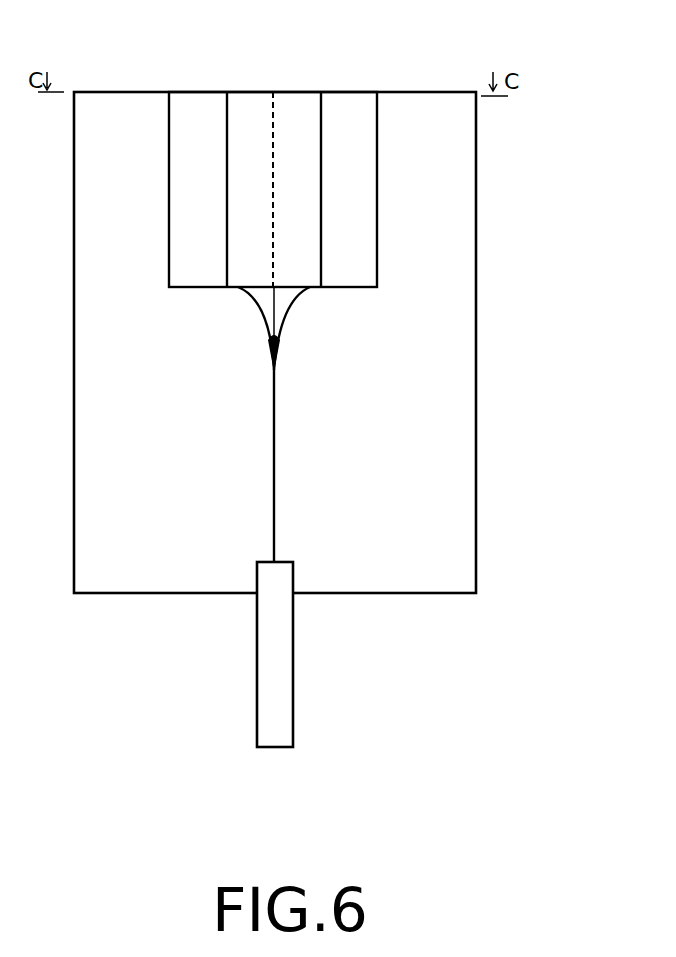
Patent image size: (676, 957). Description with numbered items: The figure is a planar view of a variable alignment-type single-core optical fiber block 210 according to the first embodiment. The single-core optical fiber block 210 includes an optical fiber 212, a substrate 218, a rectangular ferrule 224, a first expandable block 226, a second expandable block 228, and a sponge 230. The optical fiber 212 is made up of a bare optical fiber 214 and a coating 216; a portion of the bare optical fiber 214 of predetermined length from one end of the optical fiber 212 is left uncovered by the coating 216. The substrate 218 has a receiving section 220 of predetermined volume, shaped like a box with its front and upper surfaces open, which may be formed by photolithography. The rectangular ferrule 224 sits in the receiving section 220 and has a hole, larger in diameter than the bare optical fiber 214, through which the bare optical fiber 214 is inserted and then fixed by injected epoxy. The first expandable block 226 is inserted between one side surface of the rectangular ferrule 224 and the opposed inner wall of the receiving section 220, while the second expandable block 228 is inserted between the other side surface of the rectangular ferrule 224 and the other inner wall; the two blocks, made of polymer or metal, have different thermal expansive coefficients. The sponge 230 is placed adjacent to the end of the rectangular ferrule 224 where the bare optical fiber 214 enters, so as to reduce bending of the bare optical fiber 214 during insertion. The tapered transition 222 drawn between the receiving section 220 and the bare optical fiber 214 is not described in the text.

The single-core optical fiber block 210 is at (293, 803).
The optical fiber 212 is at (255, 668).
The bare optical fiber 214 is at (275, 460).
The coating 216 is at (292, 681).
The substrate 218 is at (480, 228).
The receiving section 220 is at (378, 157).
The tapered waveguide 222 is at (291, 316).
The rectangular ferrule 224 is at (295, 104).
The first expandable block 226 is at (188, 105).
The second expandable block 228 is at (352, 105).
The sponge 230 is at (266, 303).